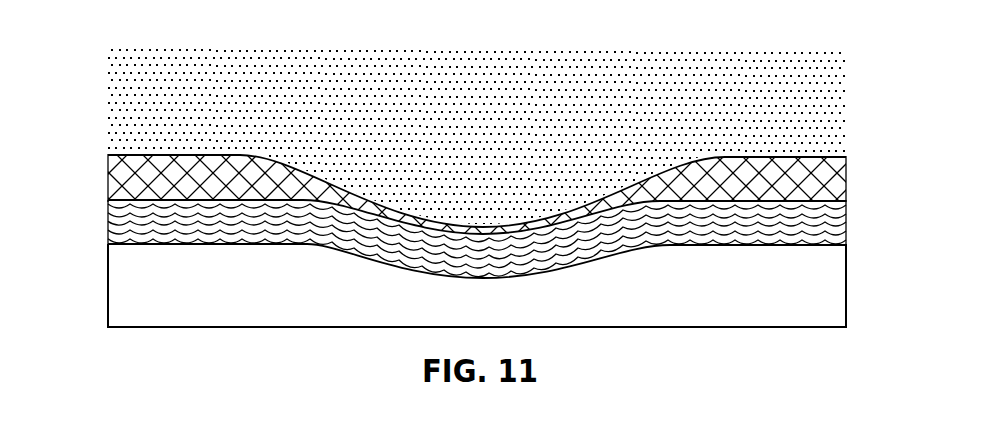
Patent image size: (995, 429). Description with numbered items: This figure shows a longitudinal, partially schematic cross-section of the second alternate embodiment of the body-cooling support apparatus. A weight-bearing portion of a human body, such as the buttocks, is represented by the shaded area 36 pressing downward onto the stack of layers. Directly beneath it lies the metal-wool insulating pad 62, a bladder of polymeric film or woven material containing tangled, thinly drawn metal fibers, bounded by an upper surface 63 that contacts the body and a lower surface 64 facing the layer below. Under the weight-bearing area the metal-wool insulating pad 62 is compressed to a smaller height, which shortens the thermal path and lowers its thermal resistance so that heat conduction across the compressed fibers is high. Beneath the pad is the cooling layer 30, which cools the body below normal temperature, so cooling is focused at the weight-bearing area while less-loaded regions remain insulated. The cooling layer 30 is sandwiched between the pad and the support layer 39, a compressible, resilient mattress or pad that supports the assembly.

The shaded area 36 is at (855, 53).
The metal-wool insulating pad 62 is at (855, 157).
The upper surface 63 is at (130, 154).
The lower surface 64 is at (127, 200).
The cooling layer 30 is at (855, 201).
The support layer 39 is at (855, 246).